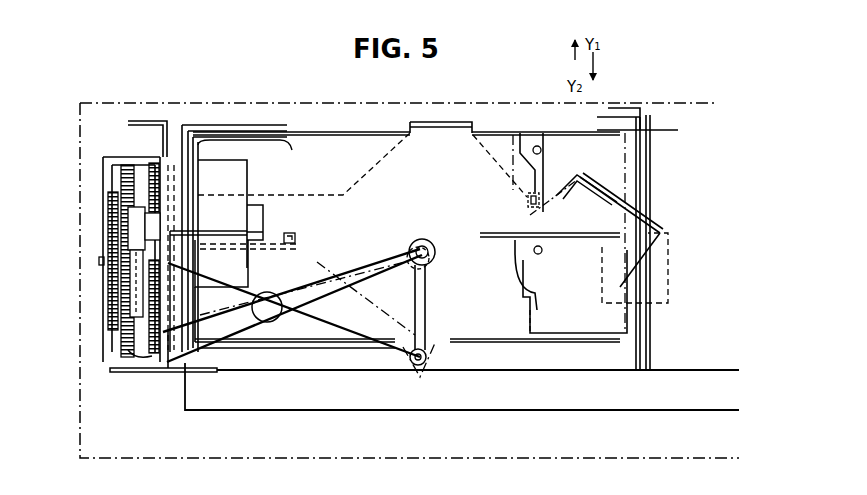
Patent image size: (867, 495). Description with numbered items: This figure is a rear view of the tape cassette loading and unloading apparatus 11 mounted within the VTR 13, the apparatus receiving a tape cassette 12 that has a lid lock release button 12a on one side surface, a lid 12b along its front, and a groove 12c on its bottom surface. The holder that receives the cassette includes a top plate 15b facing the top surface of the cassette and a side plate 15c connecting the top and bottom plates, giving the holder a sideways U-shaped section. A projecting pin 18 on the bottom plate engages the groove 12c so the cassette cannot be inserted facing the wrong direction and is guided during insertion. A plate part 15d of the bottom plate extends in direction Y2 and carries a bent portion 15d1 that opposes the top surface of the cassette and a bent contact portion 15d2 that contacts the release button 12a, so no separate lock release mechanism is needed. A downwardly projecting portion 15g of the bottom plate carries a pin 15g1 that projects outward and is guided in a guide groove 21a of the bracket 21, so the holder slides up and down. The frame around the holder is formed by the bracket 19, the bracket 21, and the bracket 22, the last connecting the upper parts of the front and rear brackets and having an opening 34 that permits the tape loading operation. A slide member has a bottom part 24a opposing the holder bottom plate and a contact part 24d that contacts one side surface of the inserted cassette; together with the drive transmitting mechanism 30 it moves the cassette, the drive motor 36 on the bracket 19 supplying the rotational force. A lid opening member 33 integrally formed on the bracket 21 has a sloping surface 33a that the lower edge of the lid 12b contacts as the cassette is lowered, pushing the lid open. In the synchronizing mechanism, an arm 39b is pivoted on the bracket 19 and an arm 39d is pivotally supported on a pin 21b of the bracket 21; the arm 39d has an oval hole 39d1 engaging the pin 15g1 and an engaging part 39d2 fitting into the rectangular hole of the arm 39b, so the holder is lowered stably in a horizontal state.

The tape cassette loading and unloading apparatus 11 is at (325, 123).
The tape cassette 12 is at (487, 129).
The lid lock release button 12a is at (540, 212).
The lid 12b is at (565, 131).
The groove 12c is at (290, 248).
The magnetic recording and/or reproducing apparatus (VTR) 13 is at (227, 101).
The top plate 15b is at (257, 138).
The side plate 15c is at (196, 145).
The plate part 15d is at (526, 134).
The bent portion 15d1 is at (437, 121).
The bent contact portion 15d2 is at (528, 198).
The downwardly projecting portion 15g is at (437, 249).
The pin 15g1 is at (441, 270).
The projecting pin 18 is at (296, 234).
The bracket 19 is at (143, 120).
The bracket 21 is at (372, 145).
The guide groove 21a is at (428, 364).
The pin 21b is at (311, 300).
The bracket 22 is at (641, 110).
The bottom part 24a is at (204, 250).
The contact part 24d is at (266, 162).
The drive transmitting mechanism 30 is at (98, 238).
The lid opening member 33 is at (668, 268).
The sloping surface 33a is at (620, 242).
The opening 34 is at (640, 198).
The drive motor 36 is at (263, 215).
The arm 39b is at (127, 352).
The arm 39d is at (369, 289).
The oval hole 39d1 is at (424, 288).
The engaging part 39d2 is at (170, 364).